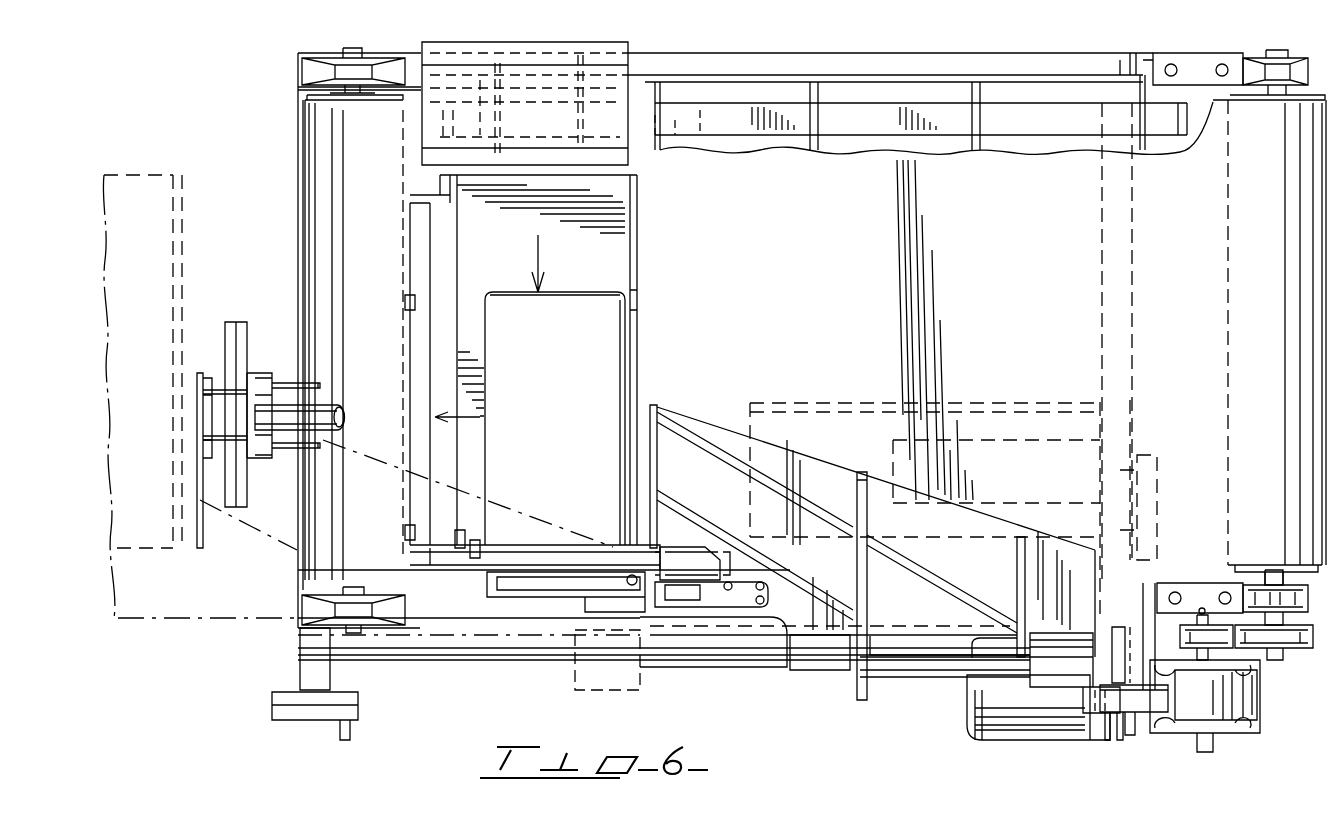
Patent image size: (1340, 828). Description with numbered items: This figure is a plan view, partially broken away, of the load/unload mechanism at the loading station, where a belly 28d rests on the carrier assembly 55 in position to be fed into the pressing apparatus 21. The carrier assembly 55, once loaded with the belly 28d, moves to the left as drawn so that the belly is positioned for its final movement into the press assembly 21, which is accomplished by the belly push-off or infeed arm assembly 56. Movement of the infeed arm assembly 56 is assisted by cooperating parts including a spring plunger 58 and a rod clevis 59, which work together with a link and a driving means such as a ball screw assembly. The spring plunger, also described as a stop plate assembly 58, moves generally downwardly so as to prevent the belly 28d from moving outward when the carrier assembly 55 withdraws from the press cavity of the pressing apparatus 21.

The pressing apparatus 21 is at (178, 152).
The spring plunger 58 is at (236, 316).
The carrier assembly 55 is at (637, 247).
The belly 28d is at (578, 429).
The rod clevis 59 is at (652, 585).
The infeed arm assembly 56 is at (497, 597).